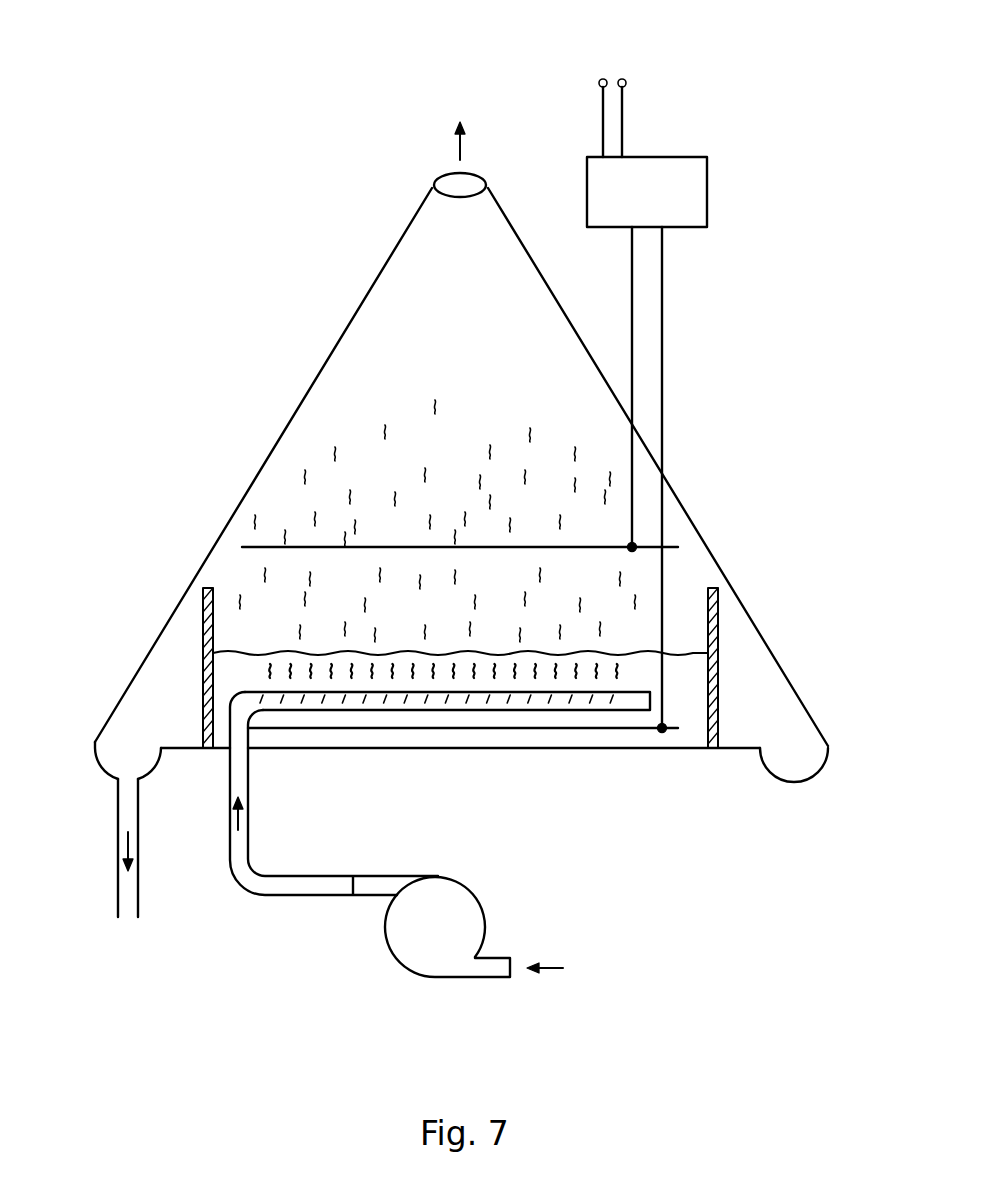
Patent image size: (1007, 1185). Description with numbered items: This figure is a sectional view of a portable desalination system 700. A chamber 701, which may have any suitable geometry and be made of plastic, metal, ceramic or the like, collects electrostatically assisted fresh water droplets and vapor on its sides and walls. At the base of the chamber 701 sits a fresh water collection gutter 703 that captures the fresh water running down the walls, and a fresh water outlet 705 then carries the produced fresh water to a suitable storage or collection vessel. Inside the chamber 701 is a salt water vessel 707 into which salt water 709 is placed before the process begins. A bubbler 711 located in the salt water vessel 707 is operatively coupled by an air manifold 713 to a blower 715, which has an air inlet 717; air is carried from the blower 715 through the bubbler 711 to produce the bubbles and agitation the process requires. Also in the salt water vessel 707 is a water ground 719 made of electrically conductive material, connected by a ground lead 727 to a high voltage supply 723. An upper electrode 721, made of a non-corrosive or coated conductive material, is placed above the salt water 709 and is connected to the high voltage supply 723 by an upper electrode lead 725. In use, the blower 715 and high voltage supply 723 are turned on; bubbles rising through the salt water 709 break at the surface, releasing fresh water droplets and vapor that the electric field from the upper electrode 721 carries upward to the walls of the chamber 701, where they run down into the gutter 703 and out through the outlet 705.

The desalination apparatus 700 is at (198, 98).
The chamber 701 is at (357, 312).
The fresh water collection gutter 703 is at (97, 725).
The fresh water outlet 705 is at (118, 877).
The salt water vessel 707 is at (718, 602).
The salt water 709 is at (233, 670).
The bubbler 711 is at (337, 705).
The air manifold 713 is at (293, 885).
The blower 715 is at (457, 907).
The air inlet 717 is at (548, 970).
The water ground 719 is at (610, 730).
The upper electrode 721 is at (282, 543).
The high voltage supply 723 is at (668, 168).
The upper electrode lead 725 is at (632, 275).
The ground lead 727 is at (663, 317).